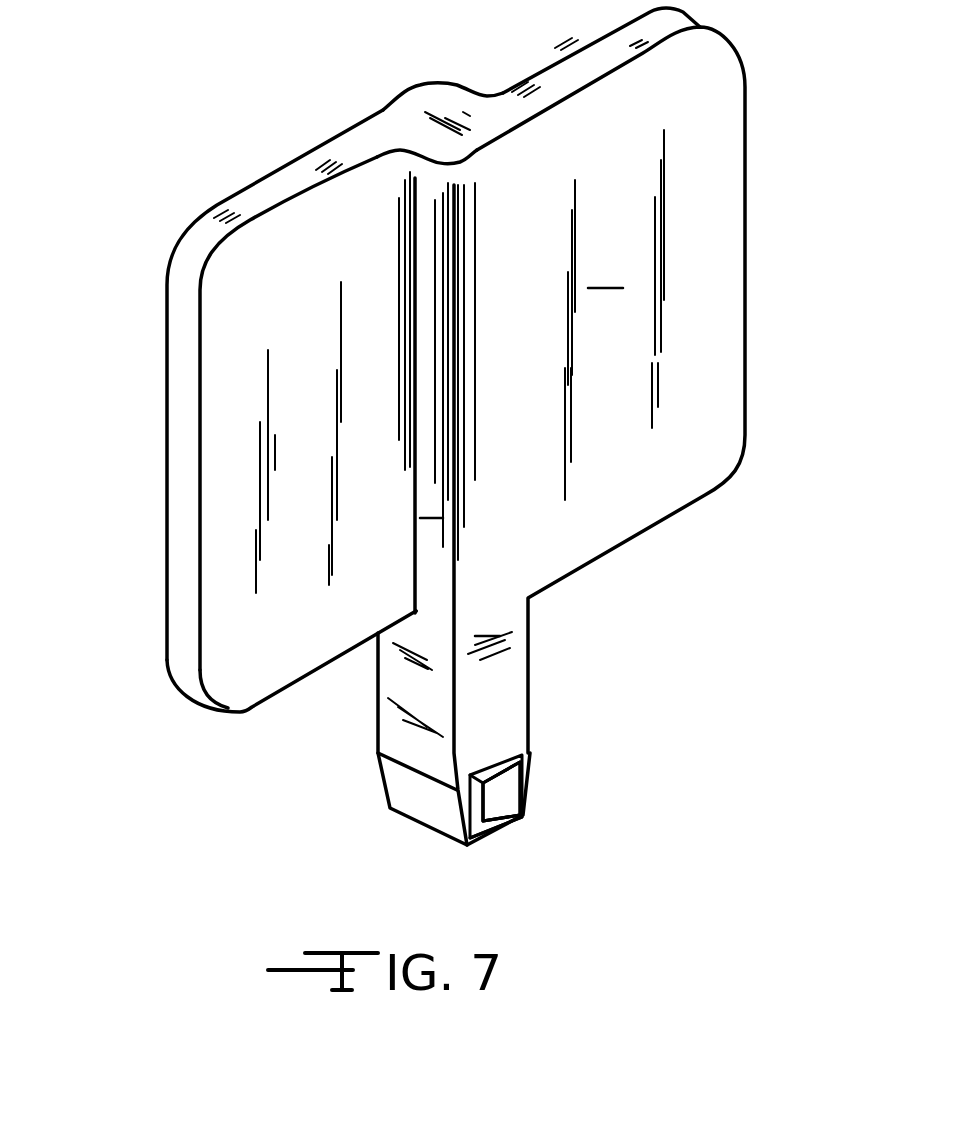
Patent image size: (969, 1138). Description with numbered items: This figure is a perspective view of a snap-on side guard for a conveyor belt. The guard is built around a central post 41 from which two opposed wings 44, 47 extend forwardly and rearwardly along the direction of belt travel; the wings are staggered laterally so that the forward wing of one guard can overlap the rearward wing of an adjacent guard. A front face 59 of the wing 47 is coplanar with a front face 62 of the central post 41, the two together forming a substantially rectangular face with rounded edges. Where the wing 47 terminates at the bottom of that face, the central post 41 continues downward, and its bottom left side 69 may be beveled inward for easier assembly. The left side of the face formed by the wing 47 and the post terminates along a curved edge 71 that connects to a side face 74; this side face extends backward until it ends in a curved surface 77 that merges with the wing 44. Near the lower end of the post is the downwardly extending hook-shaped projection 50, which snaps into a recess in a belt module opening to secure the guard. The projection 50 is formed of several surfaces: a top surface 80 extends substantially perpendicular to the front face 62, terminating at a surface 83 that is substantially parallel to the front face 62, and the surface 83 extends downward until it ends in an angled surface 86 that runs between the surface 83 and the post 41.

The wing 44 is at (222, 342).
The wing 47 is at (727, 158).
The curved surface 77 is at (403, 153).
The front face 59 is at (606, 273).
The side face 74 is at (437, 392).
The curved edge 71 is at (455, 540).
The front face 62 is at (490, 636).
The central post 41 is at (490, 677).
The bottom left side 69 is at (425, 802).
The top surface 80 is at (500, 760).
The hook-shaped projection 50 is at (512, 792).
The surface 83 is at (498, 798).
The angled surface 86 is at (503, 818).